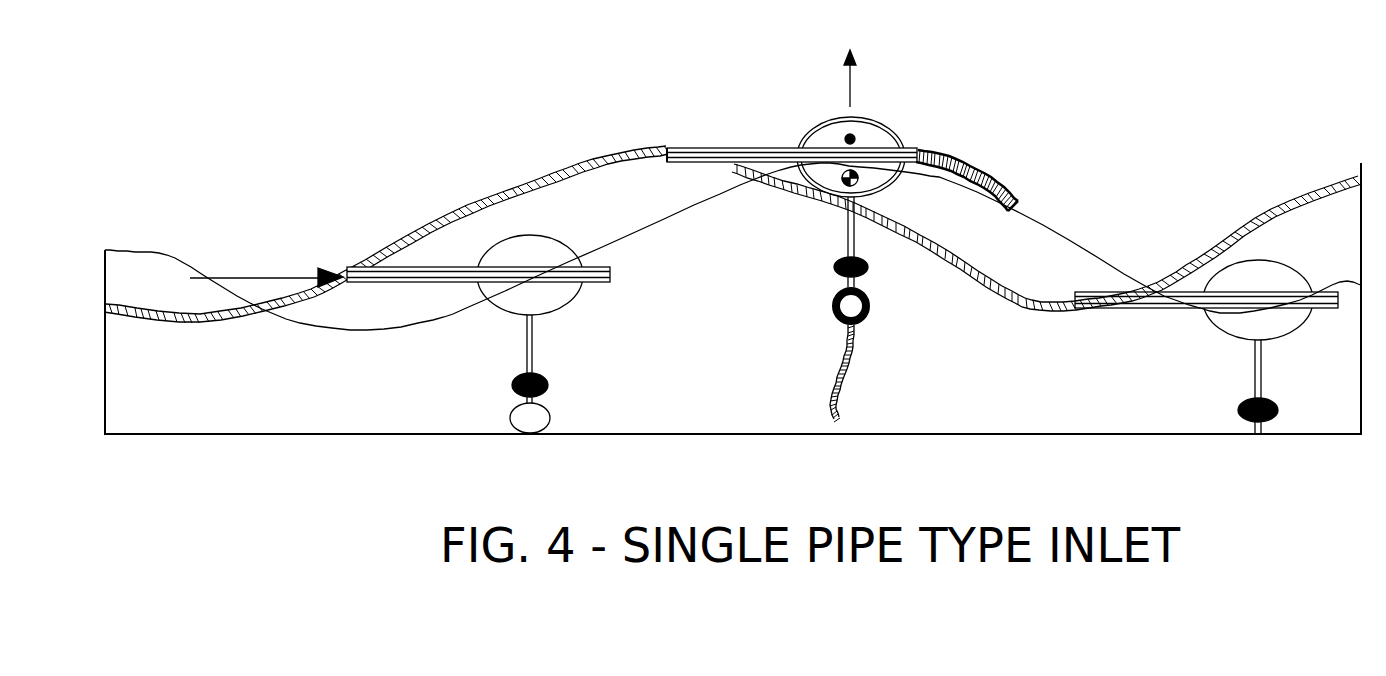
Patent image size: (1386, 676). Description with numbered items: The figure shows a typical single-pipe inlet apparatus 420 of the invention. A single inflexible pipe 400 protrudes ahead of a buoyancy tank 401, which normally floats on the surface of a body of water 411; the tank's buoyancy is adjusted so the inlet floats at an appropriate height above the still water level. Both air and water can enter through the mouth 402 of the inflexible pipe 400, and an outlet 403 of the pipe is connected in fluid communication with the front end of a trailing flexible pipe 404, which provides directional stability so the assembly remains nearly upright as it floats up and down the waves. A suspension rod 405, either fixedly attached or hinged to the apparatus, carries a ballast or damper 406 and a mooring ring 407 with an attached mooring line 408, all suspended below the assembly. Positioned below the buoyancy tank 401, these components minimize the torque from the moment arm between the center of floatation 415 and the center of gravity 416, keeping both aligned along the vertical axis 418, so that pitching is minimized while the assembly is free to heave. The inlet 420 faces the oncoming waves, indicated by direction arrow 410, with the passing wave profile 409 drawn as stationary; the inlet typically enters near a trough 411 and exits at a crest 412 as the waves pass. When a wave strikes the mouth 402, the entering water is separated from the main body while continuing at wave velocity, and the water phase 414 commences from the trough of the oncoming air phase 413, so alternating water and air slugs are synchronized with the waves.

The inflexible pipe 400 is at (701, 133).
The buoyancy tank 401 is at (790, 125).
The mouth 402 is at (653, 181).
The outlet 403 is at (921, 135).
The flexible pipe 404 is at (1016, 177).
The suspension rod 405 is at (838, 243).
The ballast 406 is at (866, 272).
The mooring ring 407 is at (872, 306).
The mooring line 408 is at (828, 397).
The wave 409 is at (170, 250).
The direction arrow 410 is at (292, 262).
The trough 411 is at (1148, 262).
The crest 412 is at (763, 200).
The air phase 413 is at (1011, 318).
The water phase 414 is at (470, 190).
The center of floatation 415 is at (855, 135).
The center of gravity 416 is at (862, 181).
The vertical axis 418 is at (845, 77).
The inlet apparatus 420 is at (1022, 92).